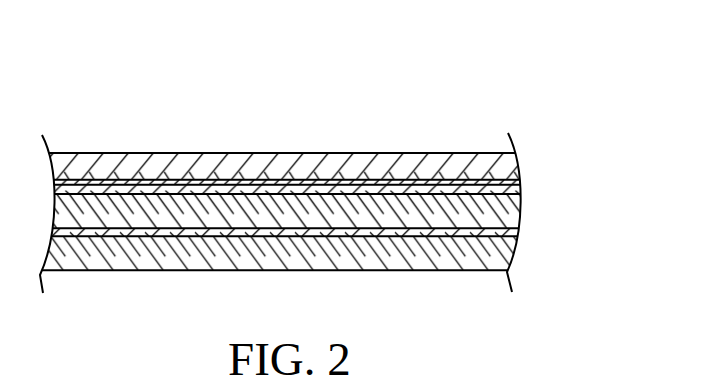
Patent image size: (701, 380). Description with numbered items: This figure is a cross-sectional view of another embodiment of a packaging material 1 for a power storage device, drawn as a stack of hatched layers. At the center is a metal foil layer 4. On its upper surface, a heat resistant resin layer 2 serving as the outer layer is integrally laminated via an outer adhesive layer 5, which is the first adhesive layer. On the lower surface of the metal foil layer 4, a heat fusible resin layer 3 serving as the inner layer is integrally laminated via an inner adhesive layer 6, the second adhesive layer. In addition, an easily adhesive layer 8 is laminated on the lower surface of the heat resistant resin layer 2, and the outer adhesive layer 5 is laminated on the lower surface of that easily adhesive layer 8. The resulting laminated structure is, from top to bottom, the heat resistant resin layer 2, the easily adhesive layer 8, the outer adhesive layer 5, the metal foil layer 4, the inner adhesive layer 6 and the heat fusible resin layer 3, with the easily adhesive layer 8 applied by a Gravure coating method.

The packaging material for a power storage device 1 is at (463, 100).
The heat resistant resin layer 2 is at (510, 167).
The easily adhesive layer 8 is at (517, 182).
The outer adhesive layer 5 is at (520, 188).
The metal foil layer 4 is at (507, 215).
The inner adhesive layer 6 is at (510, 233).
The heat fusible resin layer 3 is at (508, 250).